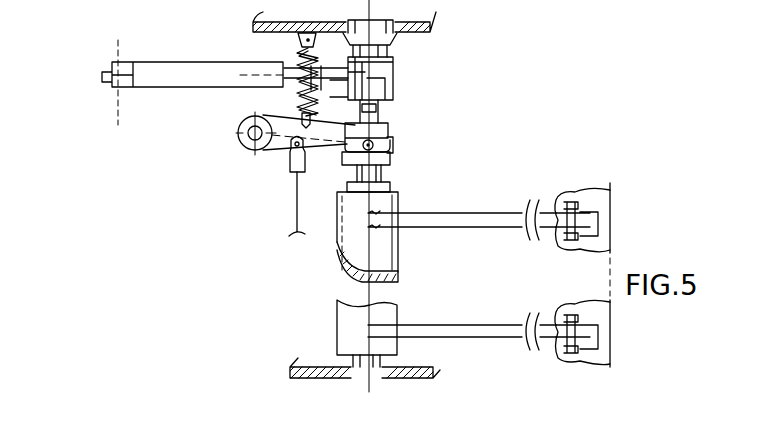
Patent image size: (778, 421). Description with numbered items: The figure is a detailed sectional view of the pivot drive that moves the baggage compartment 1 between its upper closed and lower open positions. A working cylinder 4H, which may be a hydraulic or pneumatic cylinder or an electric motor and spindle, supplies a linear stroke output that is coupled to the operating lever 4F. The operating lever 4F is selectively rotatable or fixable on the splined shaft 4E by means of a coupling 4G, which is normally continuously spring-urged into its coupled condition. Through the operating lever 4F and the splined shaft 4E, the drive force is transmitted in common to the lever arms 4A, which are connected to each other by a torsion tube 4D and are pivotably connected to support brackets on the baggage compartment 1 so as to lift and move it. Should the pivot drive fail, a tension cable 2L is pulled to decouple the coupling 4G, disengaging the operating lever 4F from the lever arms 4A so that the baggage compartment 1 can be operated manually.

The working cylinder 4H is at (188, 80).
The operating lever 4F is at (380, 63).
The coupling 4G is at (405, 128).
The splined shaft 4E is at (380, 173).
The lever arms 4A is at (472, 221).
The torsion tube 4D is at (350, 313).
The tension cable 2L is at (297, 199).
The baggage compartment 1 is at (611, 203).